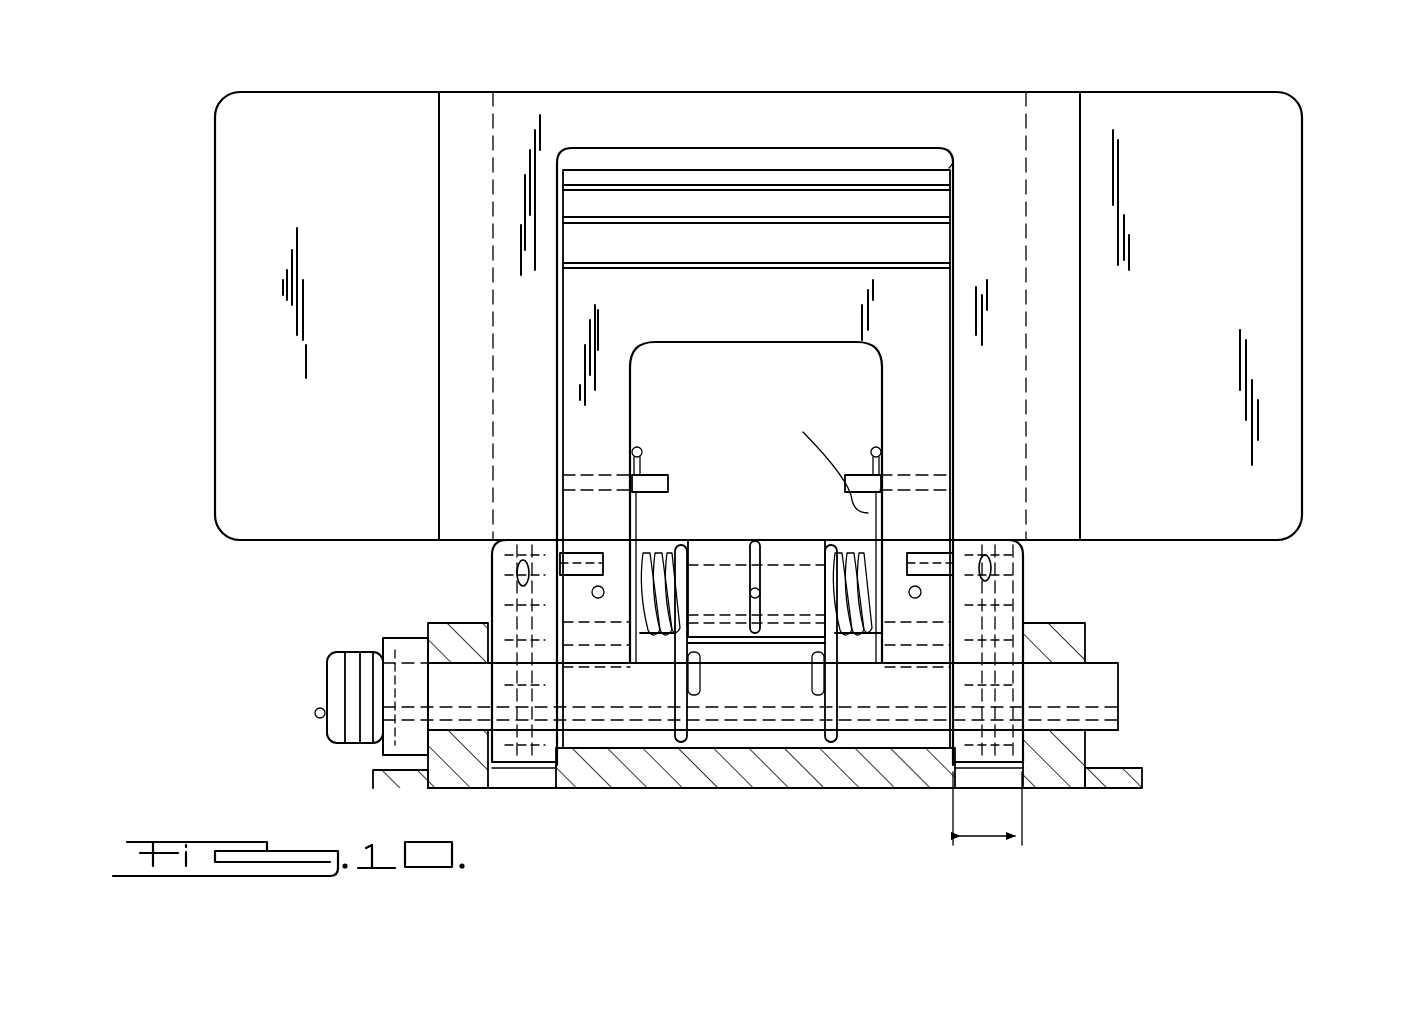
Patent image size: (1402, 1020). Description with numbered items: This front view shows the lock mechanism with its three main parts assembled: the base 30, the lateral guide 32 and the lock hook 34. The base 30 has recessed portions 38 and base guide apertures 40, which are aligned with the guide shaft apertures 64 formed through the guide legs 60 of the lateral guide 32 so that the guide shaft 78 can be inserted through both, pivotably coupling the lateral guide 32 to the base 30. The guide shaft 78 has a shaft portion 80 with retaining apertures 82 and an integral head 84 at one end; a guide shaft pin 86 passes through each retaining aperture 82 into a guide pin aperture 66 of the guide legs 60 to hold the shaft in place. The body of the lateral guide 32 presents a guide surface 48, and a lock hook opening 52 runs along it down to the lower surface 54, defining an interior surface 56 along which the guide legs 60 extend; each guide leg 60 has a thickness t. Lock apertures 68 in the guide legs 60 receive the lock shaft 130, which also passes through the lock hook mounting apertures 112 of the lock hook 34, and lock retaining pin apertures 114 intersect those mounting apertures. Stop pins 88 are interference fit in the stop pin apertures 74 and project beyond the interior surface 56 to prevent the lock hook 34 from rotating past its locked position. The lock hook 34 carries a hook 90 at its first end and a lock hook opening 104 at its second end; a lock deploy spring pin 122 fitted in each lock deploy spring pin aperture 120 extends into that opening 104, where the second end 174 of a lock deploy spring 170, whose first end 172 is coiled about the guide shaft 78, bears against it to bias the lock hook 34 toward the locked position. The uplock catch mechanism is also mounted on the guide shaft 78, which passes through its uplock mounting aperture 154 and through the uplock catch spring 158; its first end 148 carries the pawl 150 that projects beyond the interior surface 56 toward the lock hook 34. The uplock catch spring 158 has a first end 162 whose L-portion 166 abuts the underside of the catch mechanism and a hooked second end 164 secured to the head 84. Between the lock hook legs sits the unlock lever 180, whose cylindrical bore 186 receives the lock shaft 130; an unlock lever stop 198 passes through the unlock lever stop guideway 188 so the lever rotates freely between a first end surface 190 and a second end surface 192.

The base 30 is at (185, 245).
The lateral guide 32 is at (1282, 140).
The lock hook 34 is at (785, 314).
The recessed portions 38 is at (988, 768).
The base guide apertures 40 is at (472, 732).
The guide surface 48 is at (884, 112).
The lock hook opening 52 is at (740, 155).
The lower surface 54 is at (525, 775).
The interior surface 56 is at (944, 155).
The guide legs 60 is at (1032, 640).
The guide shaft apertures 64 is at (548, 692).
The guide pin apertures 66 is at (1028, 565).
The lock apertures 68 is at (1016, 605).
The stop pin apertures 74 is at (1035, 548).
The guide shaft 78 is at (1136, 706).
The shaft portion 80 is at (1112, 678).
The retaining apertures 82 is at (1056, 686).
The head 84 is at (325, 668).
The guide shaft pin 86 is at (1040, 650).
The stop pin 88 is at (912, 553).
The hook 90 is at (935, 200).
The lock hook opening 104 is at (790, 374).
The lock hook mounting apertures 112 is at (610, 555).
The lock retaining pin aperture 114 is at (915, 598).
The lock deploy spring pin aperture 120 is at (920, 490).
The lock deploy spring pin 122 is at (855, 472).
The lock shaft 130 is at (488, 585).
The first end 148 is at (392, 630).
The pawl 150 is at (635, 655).
The uplock mounting aperture 154 is at (378, 752).
The uplock catch spring 158 is at (348, 750).
The first end 162 is at (382, 650).
The second end 164 is at (315, 713).
The L-portion 166 is at (410, 637).
The lock deploy spring 170 is at (868, 640).
The first end 172 is at (830, 716).
The second end 174 is at (835, 457).
The unlock lever 180 is at (691, 542).
The cylindrical bore 186 is at (660, 552).
The unlock lever stop guideway 188 is at (748, 582).
The first end surface 190 is at (752, 542).
The second end surface 192 is at (760, 627).
The unlock lever stop 198 is at (758, 622).
The thickness t is at (992, 840).